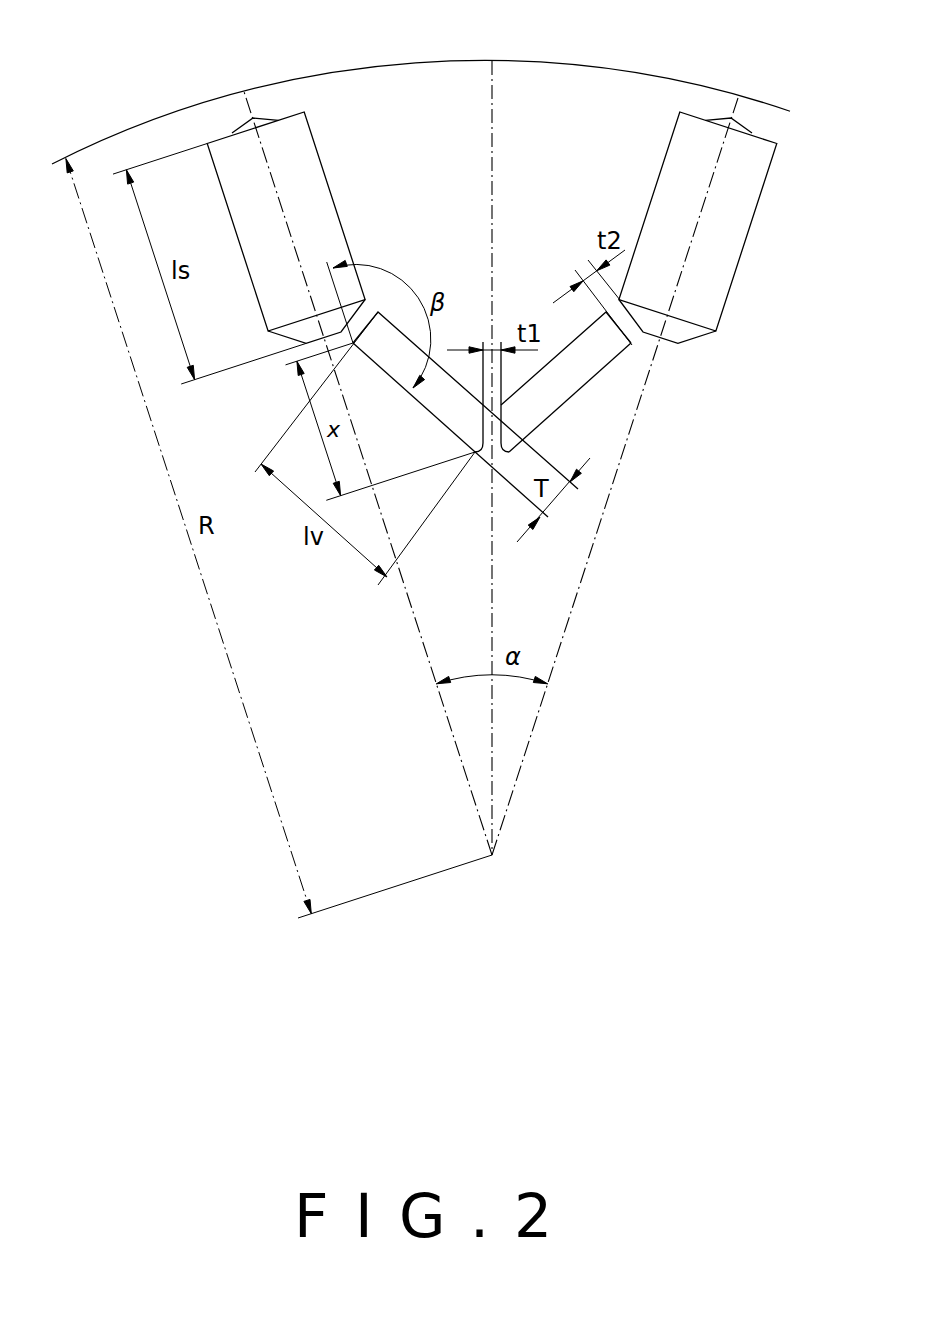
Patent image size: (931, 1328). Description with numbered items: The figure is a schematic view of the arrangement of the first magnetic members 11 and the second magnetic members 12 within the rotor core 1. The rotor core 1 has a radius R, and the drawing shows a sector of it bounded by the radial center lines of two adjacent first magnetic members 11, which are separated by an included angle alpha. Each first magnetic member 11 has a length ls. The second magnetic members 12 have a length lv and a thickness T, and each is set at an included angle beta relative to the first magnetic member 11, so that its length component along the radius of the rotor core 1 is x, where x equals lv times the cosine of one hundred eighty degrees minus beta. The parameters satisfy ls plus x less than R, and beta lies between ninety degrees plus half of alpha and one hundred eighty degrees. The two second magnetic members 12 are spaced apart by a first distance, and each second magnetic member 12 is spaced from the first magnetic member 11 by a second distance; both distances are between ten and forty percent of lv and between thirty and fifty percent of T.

The rotor core 1 is at (297, 80).
The first magnetic member 11 is at (318, 150).
The second magnetic member 12 is at (433, 364).